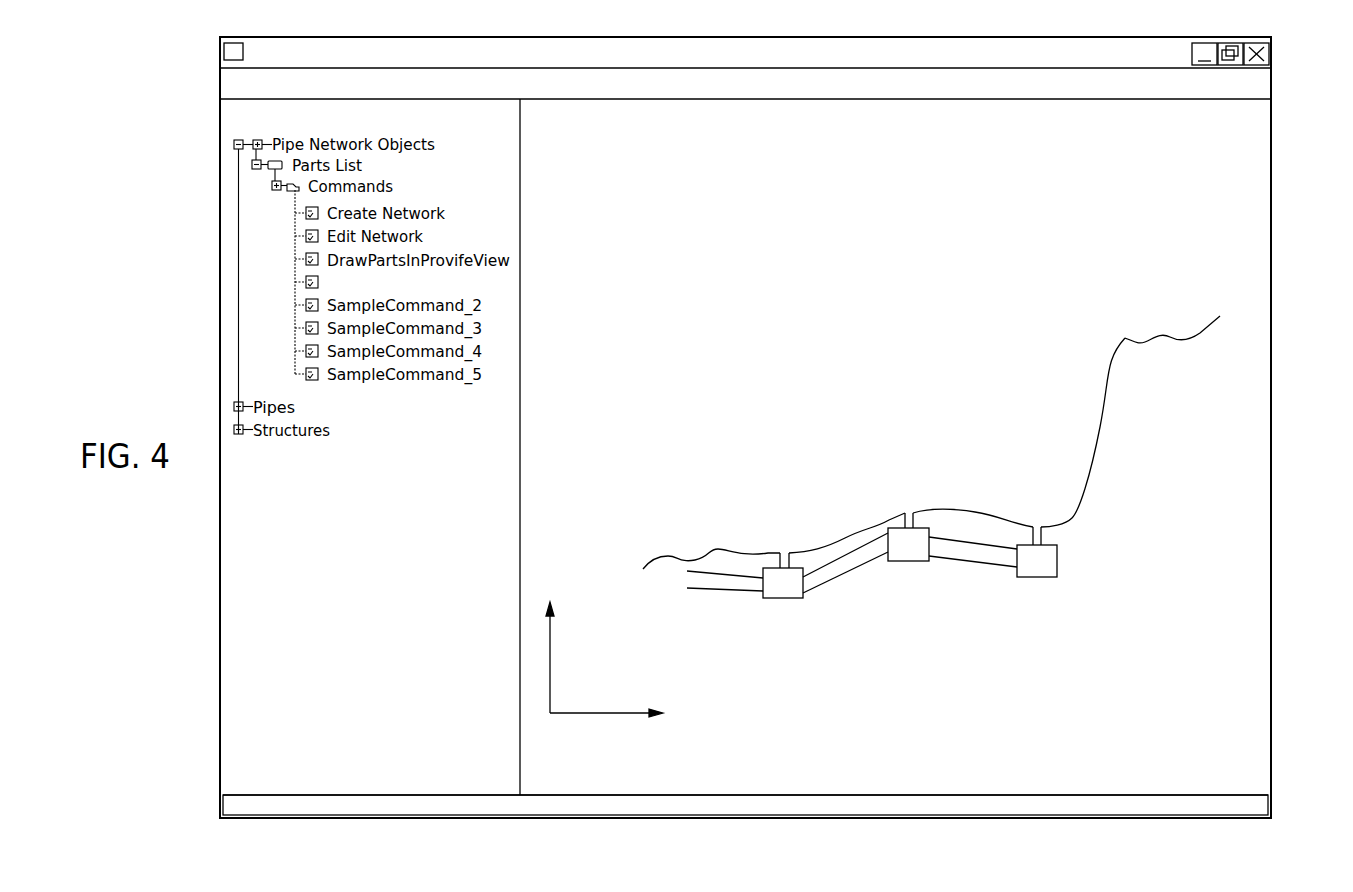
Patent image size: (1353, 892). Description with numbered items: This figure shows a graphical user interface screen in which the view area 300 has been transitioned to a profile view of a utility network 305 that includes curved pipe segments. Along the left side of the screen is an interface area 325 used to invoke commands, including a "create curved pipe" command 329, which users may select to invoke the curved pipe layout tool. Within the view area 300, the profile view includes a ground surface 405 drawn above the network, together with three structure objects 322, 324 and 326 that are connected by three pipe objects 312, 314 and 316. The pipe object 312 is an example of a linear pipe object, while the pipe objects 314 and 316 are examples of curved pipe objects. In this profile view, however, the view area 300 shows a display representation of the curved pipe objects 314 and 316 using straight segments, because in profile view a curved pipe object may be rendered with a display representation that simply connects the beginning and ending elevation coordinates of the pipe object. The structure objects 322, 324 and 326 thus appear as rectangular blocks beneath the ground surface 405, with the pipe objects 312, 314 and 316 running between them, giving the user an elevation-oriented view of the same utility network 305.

The view area 300 is at (1271, 190).
The utility network 305 is at (1027, 243).
The pipe object 312 is at (725, 590).
The pipe object 314 is at (848, 573).
The pipe object 316 is at (970, 563).
The structure object 322 is at (782, 600).
The structure object 324 is at (908, 562).
The structure object 326 is at (1037, 578).
The interface area 325 is at (220, 49).
The create curved pipe command 329 is at (306, 282).
The ground surface 405 is at (1125, 338).